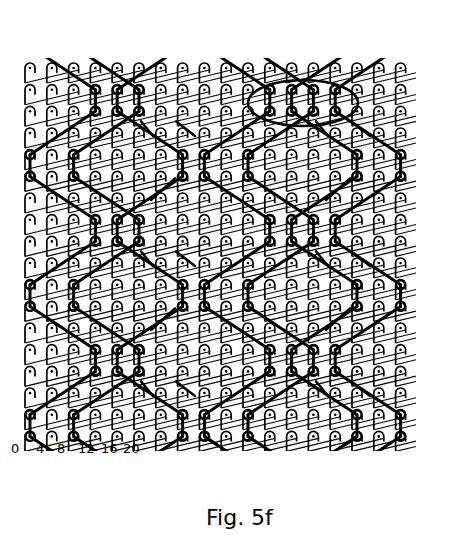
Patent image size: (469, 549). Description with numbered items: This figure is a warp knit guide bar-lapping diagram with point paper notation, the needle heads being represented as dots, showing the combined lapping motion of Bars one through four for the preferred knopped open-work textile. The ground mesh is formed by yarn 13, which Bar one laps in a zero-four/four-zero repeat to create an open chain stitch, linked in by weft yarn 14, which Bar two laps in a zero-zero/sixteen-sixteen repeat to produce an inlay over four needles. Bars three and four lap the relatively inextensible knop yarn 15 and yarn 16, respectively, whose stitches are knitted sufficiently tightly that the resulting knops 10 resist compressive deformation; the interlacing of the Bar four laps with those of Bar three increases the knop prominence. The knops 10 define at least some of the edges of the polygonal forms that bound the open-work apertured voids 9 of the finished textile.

The yarn 13 is at (18, 62).
The weft yarn 14 is at (82, 65).
The knops 10 is at (318, 65).
The open-work apertured voids 9 is at (290, 155).
The yarn 15 is at (213, 435).
The yarn 16 is at (338, 433).